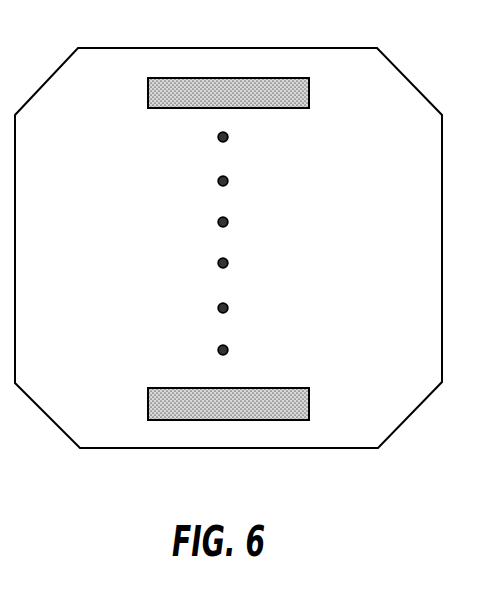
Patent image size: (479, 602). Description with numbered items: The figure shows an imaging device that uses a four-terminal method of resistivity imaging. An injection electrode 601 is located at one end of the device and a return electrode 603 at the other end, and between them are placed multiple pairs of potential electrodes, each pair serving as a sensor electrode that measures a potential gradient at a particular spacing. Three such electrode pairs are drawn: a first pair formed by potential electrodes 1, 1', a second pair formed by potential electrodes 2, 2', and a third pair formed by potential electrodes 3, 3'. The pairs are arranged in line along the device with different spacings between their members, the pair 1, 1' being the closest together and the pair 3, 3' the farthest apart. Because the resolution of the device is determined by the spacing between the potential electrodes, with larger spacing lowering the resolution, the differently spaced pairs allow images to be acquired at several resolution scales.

The injection electrode 601 is at (190, 78).
The return electrode 603 is at (190, 420).
The potential electrode 1 is at (210, 220).
The potential electrode 2 is at (210, 179).
The potential electrode 3 is at (210, 135).
The potential electrode 1' is at (210, 261).
The potential electrode 2' is at (210, 306).
The potential electrode 3' is at (210, 348).